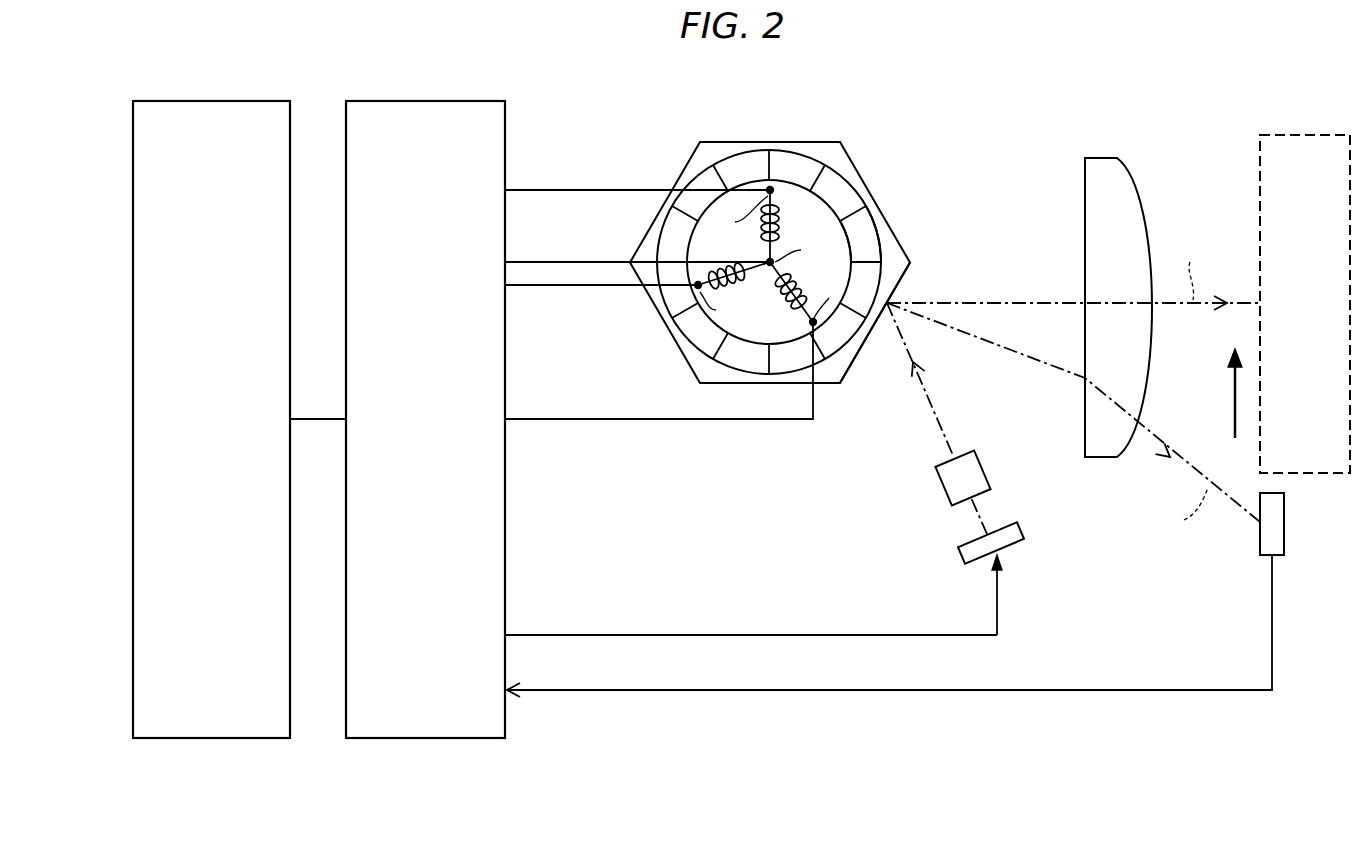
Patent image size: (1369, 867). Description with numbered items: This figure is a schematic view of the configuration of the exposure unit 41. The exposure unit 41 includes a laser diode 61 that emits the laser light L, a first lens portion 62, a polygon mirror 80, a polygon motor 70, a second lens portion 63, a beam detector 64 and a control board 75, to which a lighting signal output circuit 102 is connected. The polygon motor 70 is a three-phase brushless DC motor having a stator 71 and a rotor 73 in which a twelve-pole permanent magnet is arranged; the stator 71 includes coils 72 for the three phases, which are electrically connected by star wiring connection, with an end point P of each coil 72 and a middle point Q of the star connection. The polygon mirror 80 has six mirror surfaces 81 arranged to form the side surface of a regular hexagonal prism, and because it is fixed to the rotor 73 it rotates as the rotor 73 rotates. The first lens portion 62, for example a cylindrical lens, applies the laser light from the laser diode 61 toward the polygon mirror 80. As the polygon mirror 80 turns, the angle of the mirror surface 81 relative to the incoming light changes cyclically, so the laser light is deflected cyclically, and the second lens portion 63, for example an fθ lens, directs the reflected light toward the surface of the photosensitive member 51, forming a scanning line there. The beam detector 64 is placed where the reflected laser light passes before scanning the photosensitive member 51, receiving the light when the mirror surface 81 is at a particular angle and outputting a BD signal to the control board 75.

The lighting signal output circuit 102 is at (213, 100).
The control board 75 is at (423, 100).
The polygon motor 70 is at (718, 144).
The polygon mirror 80 is at (785, 144).
The stator 71 is at (776, 197).
The coils 72 is at (790, 302).
The rotor 73 is at (870, 247).
The mirror surfaces 81 is at (857, 356).
The exposure unit 41 is at (997, 136).
The second lens portion 63 is at (1105, 165).
The photosensitive member 51 is at (1305, 135).
The first lens portion 62 is at (940, 487).
The laser diode 61 is at (958, 553).
The beam detector 64 is at (1285, 522).